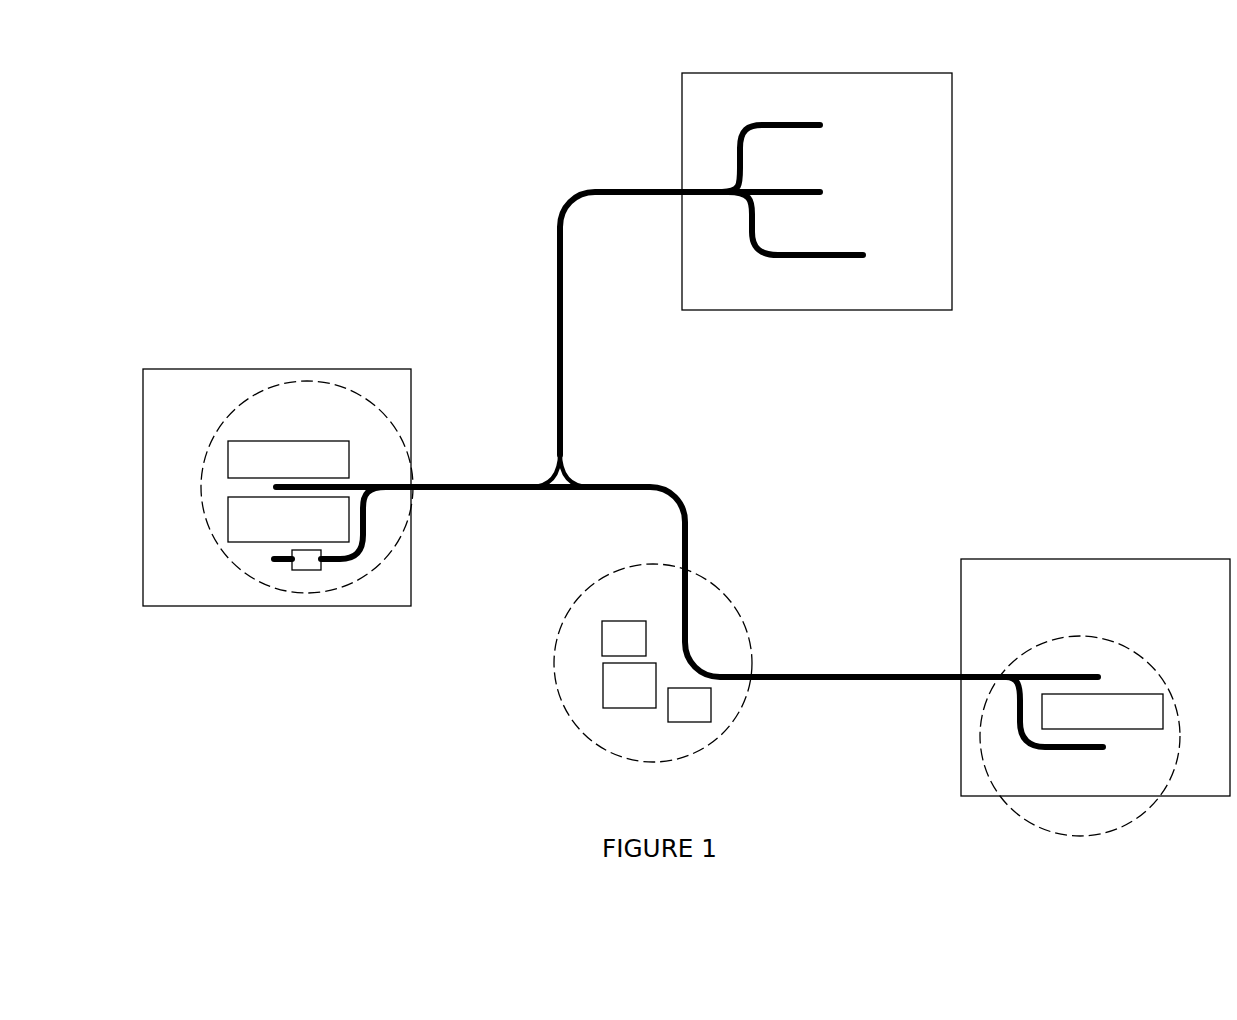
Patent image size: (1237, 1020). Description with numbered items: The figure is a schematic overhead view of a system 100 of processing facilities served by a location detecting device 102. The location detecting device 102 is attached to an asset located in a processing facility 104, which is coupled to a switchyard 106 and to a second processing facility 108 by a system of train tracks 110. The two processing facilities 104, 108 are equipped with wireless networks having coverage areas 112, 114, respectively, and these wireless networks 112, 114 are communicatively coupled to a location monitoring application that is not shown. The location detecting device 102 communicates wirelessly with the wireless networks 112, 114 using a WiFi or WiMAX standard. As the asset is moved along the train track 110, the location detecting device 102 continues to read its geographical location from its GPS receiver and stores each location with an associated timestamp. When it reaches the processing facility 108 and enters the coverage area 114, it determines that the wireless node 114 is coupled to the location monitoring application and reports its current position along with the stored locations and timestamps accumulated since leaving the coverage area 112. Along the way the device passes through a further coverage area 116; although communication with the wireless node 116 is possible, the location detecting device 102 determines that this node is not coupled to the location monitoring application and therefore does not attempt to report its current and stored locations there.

The system 100 is at (1092, 198).
The location detecting device 102 is at (305, 570).
The processing facility 104 is at (190, 606).
The switchyard 106 is at (712, 73).
The processing facility 108 is at (1143, 559).
The system of train tracks 110 is at (557, 342).
The coverage area 112 is at (270, 590).
The coverage area 114 is at (1117, 645).
The coverage area 116 is at (588, 590).